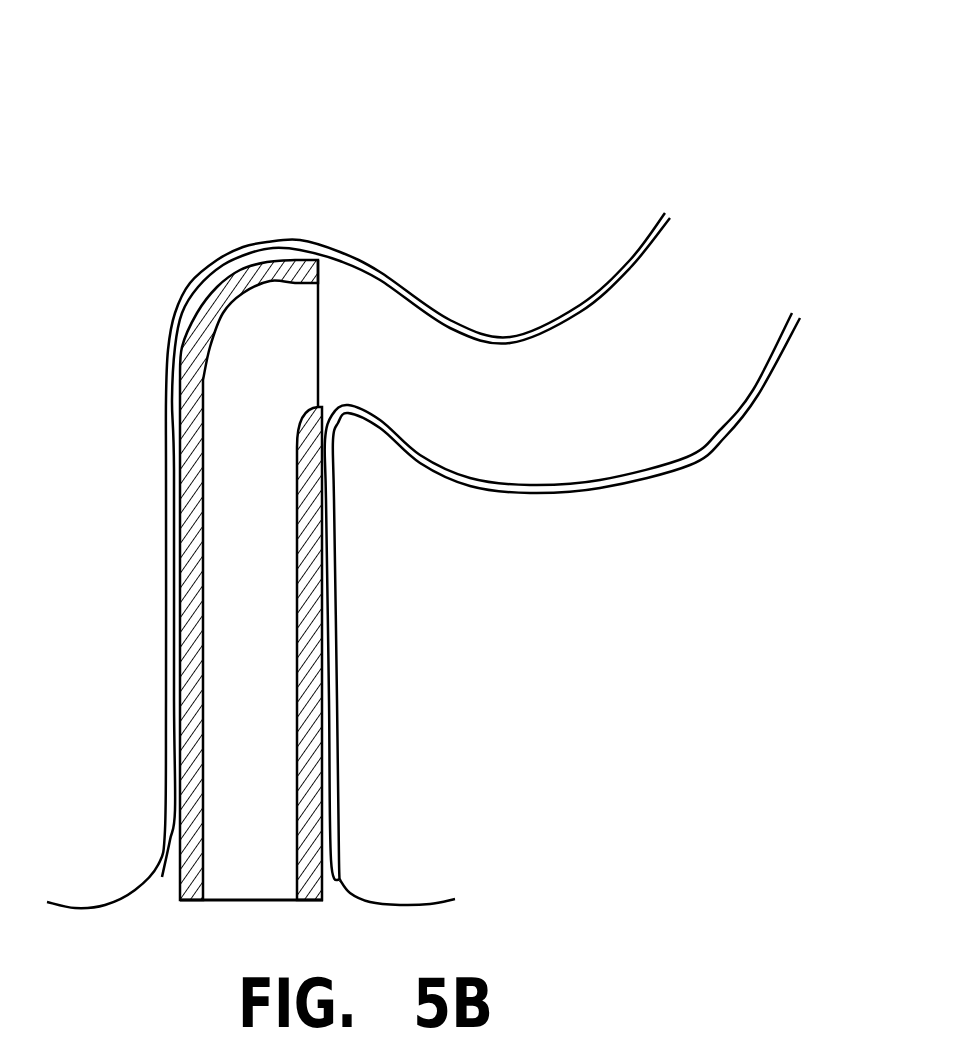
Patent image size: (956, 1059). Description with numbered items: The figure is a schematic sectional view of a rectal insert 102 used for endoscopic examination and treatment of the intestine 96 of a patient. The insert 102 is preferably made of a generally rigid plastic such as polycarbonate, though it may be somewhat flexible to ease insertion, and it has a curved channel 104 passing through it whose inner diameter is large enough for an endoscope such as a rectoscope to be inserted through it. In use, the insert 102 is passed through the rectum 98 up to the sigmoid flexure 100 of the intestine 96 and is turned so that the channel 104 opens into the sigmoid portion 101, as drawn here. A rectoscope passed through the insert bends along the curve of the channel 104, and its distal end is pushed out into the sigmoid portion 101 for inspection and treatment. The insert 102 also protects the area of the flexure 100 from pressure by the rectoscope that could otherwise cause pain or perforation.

The intestine 96 is at (262, 90).
The rectum 98 is at (330, 658).
The sigmoid flexure 100 is at (283, 260).
The sigmoid portion 101 is at (506, 337).
The rectal insert 102 is at (322, 498).
The curved channel 104 is at (285, 467).